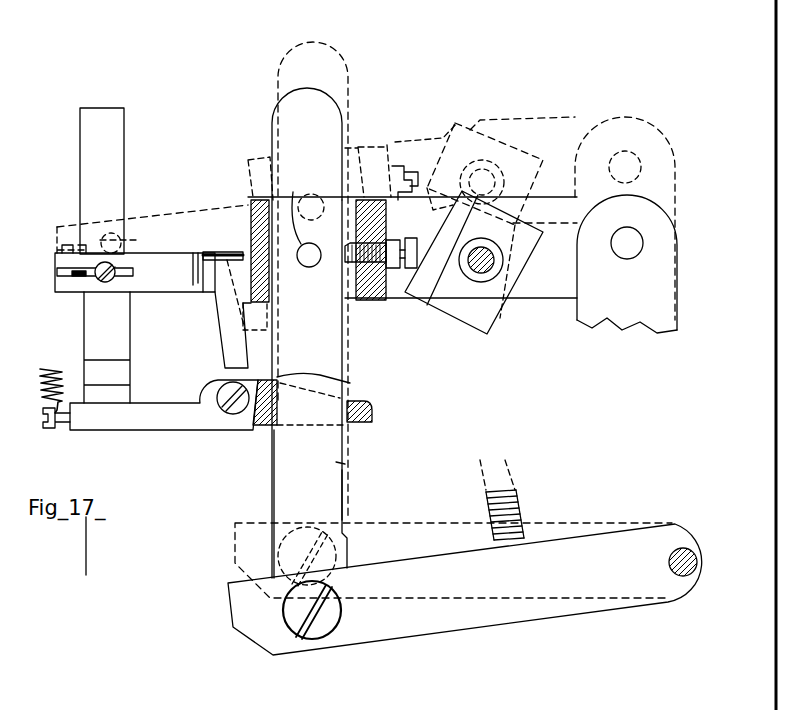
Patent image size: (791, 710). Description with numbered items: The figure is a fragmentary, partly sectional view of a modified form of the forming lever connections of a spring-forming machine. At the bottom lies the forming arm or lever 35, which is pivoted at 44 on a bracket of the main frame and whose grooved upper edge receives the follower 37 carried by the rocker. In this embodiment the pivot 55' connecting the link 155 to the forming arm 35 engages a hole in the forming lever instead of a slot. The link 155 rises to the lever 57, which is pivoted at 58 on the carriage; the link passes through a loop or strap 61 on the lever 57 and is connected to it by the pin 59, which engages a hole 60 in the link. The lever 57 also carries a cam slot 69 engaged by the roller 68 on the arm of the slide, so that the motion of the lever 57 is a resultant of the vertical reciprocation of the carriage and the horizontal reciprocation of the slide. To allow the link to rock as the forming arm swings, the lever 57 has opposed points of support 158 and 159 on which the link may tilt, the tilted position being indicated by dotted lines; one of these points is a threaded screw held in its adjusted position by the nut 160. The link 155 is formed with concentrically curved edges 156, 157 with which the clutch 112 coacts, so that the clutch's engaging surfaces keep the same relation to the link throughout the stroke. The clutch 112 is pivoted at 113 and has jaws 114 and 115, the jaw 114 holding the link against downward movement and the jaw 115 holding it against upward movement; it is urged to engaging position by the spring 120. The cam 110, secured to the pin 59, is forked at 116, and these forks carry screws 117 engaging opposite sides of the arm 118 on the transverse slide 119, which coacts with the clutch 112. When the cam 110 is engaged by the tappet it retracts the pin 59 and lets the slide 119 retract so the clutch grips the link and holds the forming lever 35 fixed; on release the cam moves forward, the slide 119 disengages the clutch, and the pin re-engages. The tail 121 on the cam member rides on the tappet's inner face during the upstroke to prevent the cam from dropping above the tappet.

The arm 118 is at (90, 133).
The forks 116 is at (157, 260).
The point of support 158 is at (263, 253).
The hole 60 is at (310, 281).
The loop or strap 61 is at (375, 197).
The roller 68 is at (500, 133).
The pivot 58 is at (627, 259).
The pin 59 is at (309, 267).
The point of support 159 is at (355, 300).
The nut 160 is at (395, 275).
The cam slot 69 is at (472, 310).
The lever 57 is at (549, 290).
The screws 117 is at (103, 282).
The cam 110 is at (218, 260).
The extension or tail 121 is at (223, 337).
The spring 120 is at (42, 370).
The jaw 114 is at (350, 383).
The jaw 115 is at (348, 422).
The pivot 113 is at (222, 410).
The clutch 112 is at (248, 422).
The transverse slide 119 is at (108, 395).
The link 155 is at (345, 464).
The curved edge 156 is at (347, 497).
The curved edge 157 is at (275, 475).
The follower 37 is at (512, 494).
The pivot 44 is at (685, 548).
The pivot 55' is at (309, 606).
The forming arm or lever 35 is at (413, 627).